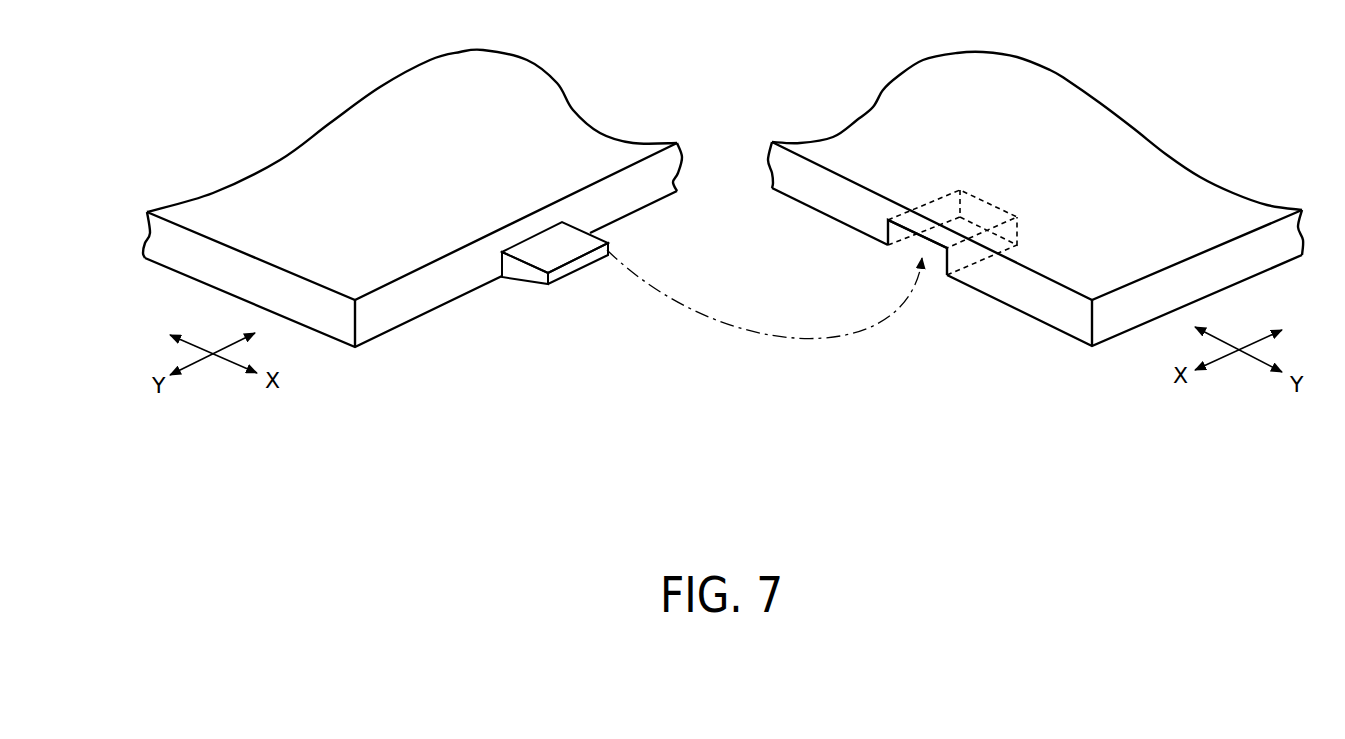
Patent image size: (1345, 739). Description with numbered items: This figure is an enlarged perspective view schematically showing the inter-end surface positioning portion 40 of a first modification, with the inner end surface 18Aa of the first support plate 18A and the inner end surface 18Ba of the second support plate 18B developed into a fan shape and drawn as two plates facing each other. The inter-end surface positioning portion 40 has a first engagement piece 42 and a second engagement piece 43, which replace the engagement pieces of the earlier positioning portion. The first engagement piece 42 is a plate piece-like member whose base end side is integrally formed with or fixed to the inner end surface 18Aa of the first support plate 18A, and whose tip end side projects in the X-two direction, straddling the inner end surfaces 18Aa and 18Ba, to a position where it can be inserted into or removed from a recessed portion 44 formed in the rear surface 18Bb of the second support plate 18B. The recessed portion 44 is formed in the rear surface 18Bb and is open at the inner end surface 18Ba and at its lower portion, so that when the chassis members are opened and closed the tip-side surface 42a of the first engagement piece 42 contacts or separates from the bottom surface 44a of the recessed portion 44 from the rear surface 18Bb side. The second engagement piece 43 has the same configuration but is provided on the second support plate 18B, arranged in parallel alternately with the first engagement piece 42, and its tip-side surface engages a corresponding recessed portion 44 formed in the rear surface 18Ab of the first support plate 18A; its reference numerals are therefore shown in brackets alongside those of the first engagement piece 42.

The first support plate 18A is at (442, 240).
The second support plate 18B is at (1035, 247).
The inner end surface of the first support plate 18Aa is at (388, 316).
The rear surface of the first support plate 18Ab is at (650, 204).
The inner end surface of the second support plate 18Ba is at (1062, 315).
The rear surface of the second support plate 18Bb is at (1005, 306).
The inter-end surface positioning portion 40 is at (593, 416).
The first engagement piece 42 is at (591, 296).
The second engagement piece 43 is at (555, 296).
The surface on the tip side of the first engagement piece 42a is at (540, 252).
The recessed portion 44 is at (907, 266).
The bottom surface of the recessed portion 44a is at (920, 236).